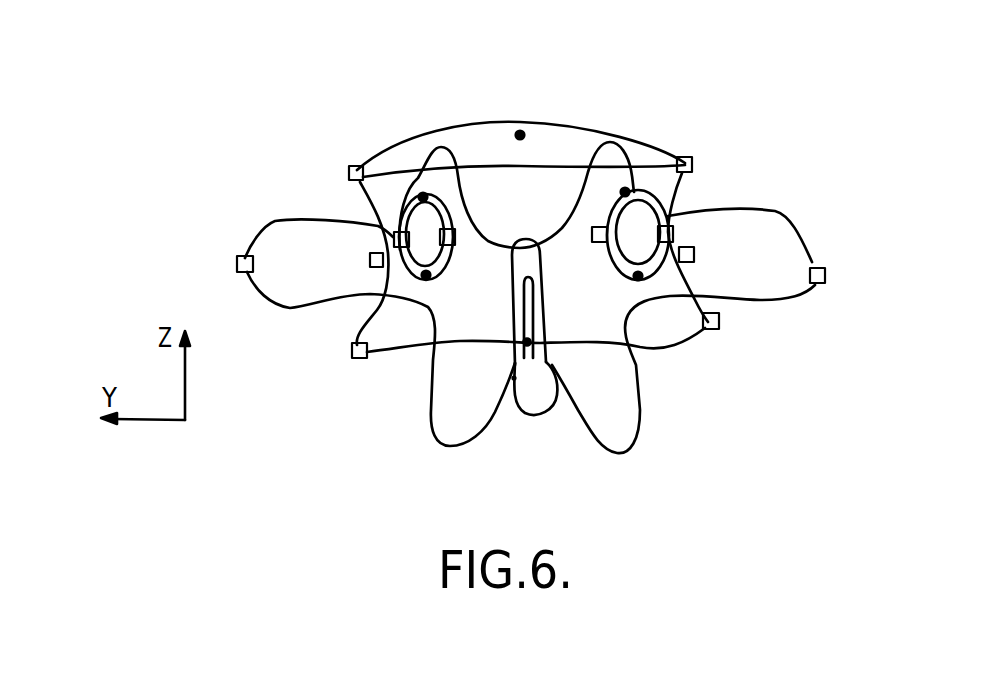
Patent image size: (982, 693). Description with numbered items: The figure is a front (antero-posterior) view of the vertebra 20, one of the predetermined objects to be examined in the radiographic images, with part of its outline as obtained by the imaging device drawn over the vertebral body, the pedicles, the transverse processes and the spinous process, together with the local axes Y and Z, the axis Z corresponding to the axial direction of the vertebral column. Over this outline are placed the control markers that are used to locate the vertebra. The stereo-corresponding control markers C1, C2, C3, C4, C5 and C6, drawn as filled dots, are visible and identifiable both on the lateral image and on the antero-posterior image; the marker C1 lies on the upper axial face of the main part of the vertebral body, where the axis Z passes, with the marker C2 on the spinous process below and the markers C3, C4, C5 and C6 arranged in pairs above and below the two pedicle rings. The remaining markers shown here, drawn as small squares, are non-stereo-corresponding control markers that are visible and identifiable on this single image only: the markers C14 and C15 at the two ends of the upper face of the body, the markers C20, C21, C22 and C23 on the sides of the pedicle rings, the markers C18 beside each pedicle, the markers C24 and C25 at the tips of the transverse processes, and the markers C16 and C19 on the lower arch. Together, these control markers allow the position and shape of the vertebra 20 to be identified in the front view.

The vertebra 20 is at (752, 122).
The stereo-corresponding control marker C1 is at (520, 135).
The stereo-corresponding control marker C2 is at (513, 380).
The stereo-corresponding control marker C3 is at (423, 195).
The stereo-corresponding control marker C4 is at (425, 277).
The stereo-corresponding control marker C5 is at (626, 190).
The stereo-corresponding control marker C6 is at (640, 278).
The non-stereo-corresponding control marker C14 is at (356, 166).
The non-stereo-corresponding control marker C15 is at (689, 158).
The non-stereo-corresponding control marker C16 is at (353, 355).
The non-stereo-corresponding control marker C18 is at (371, 261).
The non-stereo-corresponding control marker C19 is at (720, 323).
The non-stereo-corresponding control marker C20 is at (396, 237).
The non-stereo-corresponding control marker C21 is at (449, 229).
The non-stereo-corresponding control marker C22 is at (597, 227).
The non-stereo-corresponding control marker C23 is at (670, 231).
The non-stereo-corresponding control marker C24 is at (243, 270).
The non-stereo-corresponding control marker C25 is at (819, 283).